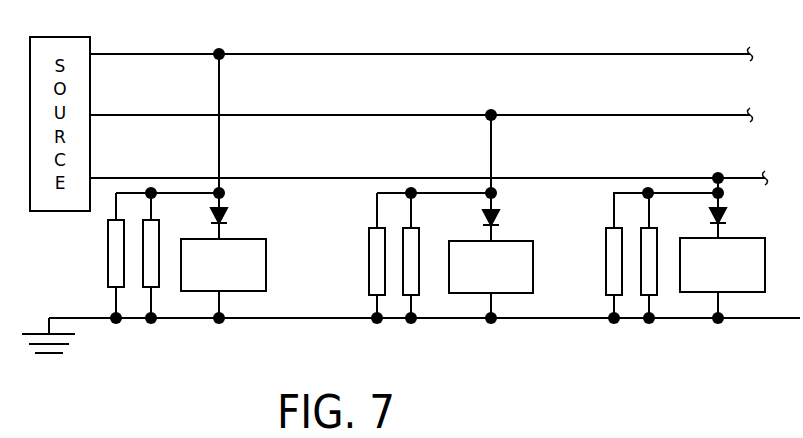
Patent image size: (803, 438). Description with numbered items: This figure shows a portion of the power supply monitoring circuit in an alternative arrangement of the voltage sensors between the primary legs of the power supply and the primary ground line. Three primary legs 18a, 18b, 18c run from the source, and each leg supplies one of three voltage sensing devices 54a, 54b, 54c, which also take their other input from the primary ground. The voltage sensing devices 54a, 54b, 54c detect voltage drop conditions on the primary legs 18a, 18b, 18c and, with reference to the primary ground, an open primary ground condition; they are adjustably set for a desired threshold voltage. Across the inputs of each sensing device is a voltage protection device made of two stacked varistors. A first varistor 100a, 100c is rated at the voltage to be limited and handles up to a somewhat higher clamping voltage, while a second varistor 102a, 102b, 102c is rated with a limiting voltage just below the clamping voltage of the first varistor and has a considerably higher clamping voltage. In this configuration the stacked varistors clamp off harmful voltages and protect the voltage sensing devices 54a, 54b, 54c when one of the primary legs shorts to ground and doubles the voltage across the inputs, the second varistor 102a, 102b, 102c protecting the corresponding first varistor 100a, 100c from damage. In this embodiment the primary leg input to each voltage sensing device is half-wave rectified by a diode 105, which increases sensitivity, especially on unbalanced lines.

The primary leg 18a is at (320, 54).
The primary leg 18b is at (527, 115).
The primary leg 18c is at (597, 178).
The diode 105 is at (227, 213).
The first varistor 100a is at (108, 258).
The first varistor 100c is at (606, 277).
The second varistor 102a is at (159, 258).
The second varistor 102b is at (419, 270).
The second varistor 102c is at (657, 268).
The voltage sensing device 54a is at (240, 291).
The voltage sensing device 54b is at (510, 293).
The voltage sensing device 54c is at (740, 292).